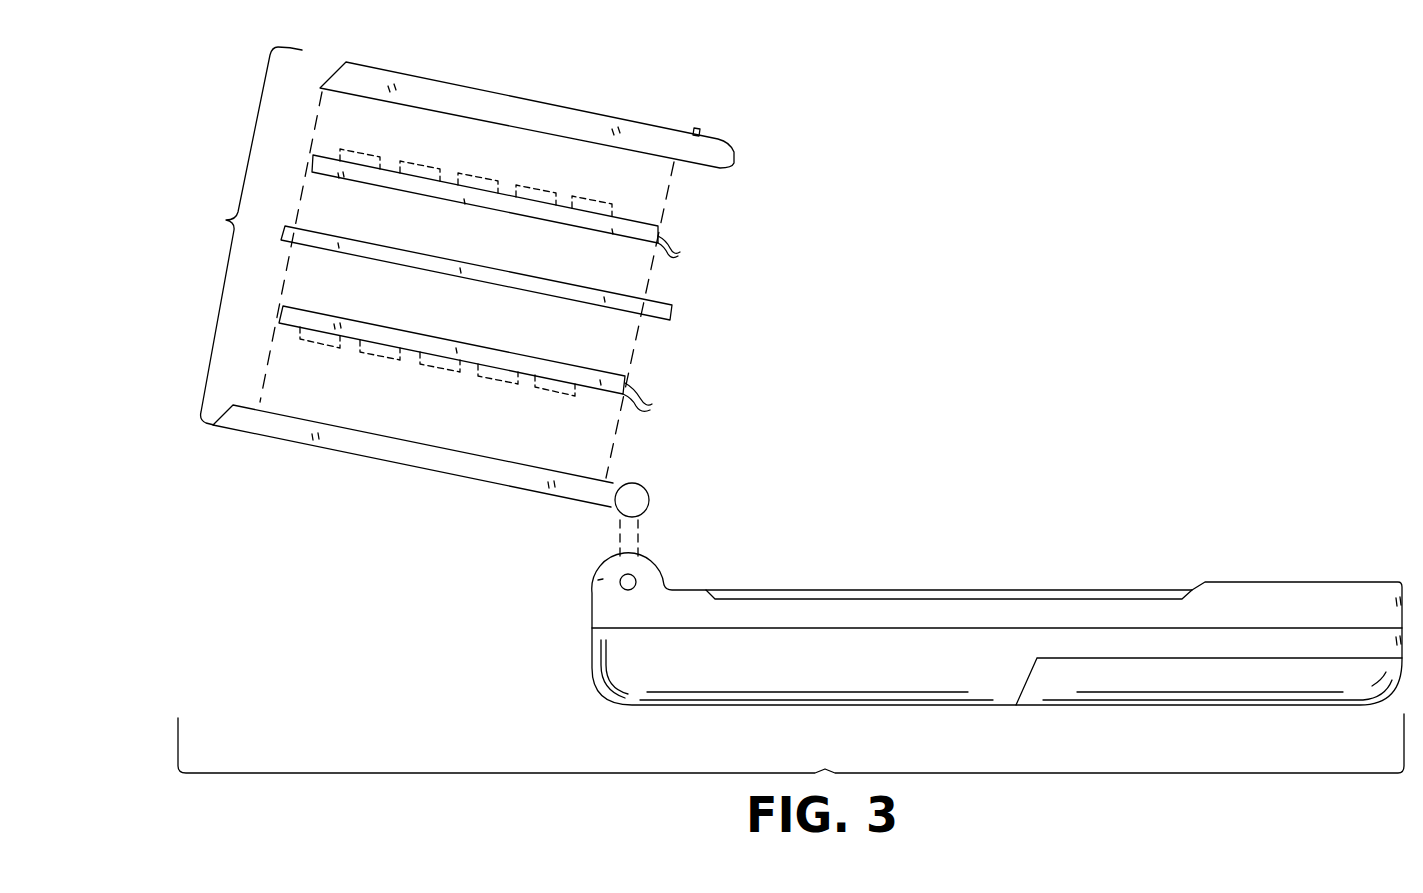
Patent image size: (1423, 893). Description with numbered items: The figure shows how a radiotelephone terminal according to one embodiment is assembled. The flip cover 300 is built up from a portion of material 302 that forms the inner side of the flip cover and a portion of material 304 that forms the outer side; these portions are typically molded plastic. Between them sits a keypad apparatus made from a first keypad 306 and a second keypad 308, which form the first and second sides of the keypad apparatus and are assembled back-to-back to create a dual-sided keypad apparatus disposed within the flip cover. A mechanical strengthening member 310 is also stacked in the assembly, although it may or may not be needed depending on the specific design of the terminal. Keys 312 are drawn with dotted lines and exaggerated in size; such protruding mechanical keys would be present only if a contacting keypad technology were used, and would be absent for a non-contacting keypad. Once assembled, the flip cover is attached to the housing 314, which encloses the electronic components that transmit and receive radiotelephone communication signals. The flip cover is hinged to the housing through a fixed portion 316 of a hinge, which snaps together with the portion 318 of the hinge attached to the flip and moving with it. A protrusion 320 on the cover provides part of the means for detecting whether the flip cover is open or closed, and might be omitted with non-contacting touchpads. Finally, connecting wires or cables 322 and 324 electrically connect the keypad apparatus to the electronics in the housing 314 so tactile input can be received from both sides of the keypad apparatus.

The flip cover 300 is at (425, 303).
The portion of material 302 is at (537, 98).
The portion of material 304 is at (447, 480).
The first keypad 306 is at (638, 224).
The second keypad 308 is at (597, 370).
The mechanical strengthening member 310 is at (673, 312).
The keys 312 is at (362, 150).
The housing 314 is at (1198, 707).
The fixed portion of a hinge 316 is at (658, 568).
The portion of the hinge attached to the flip 318 is at (612, 514).
The protrusion 320 is at (700, 128).
The connecting wire or cable 322 is at (680, 252).
The connecting wire or cable 324 is at (652, 406).